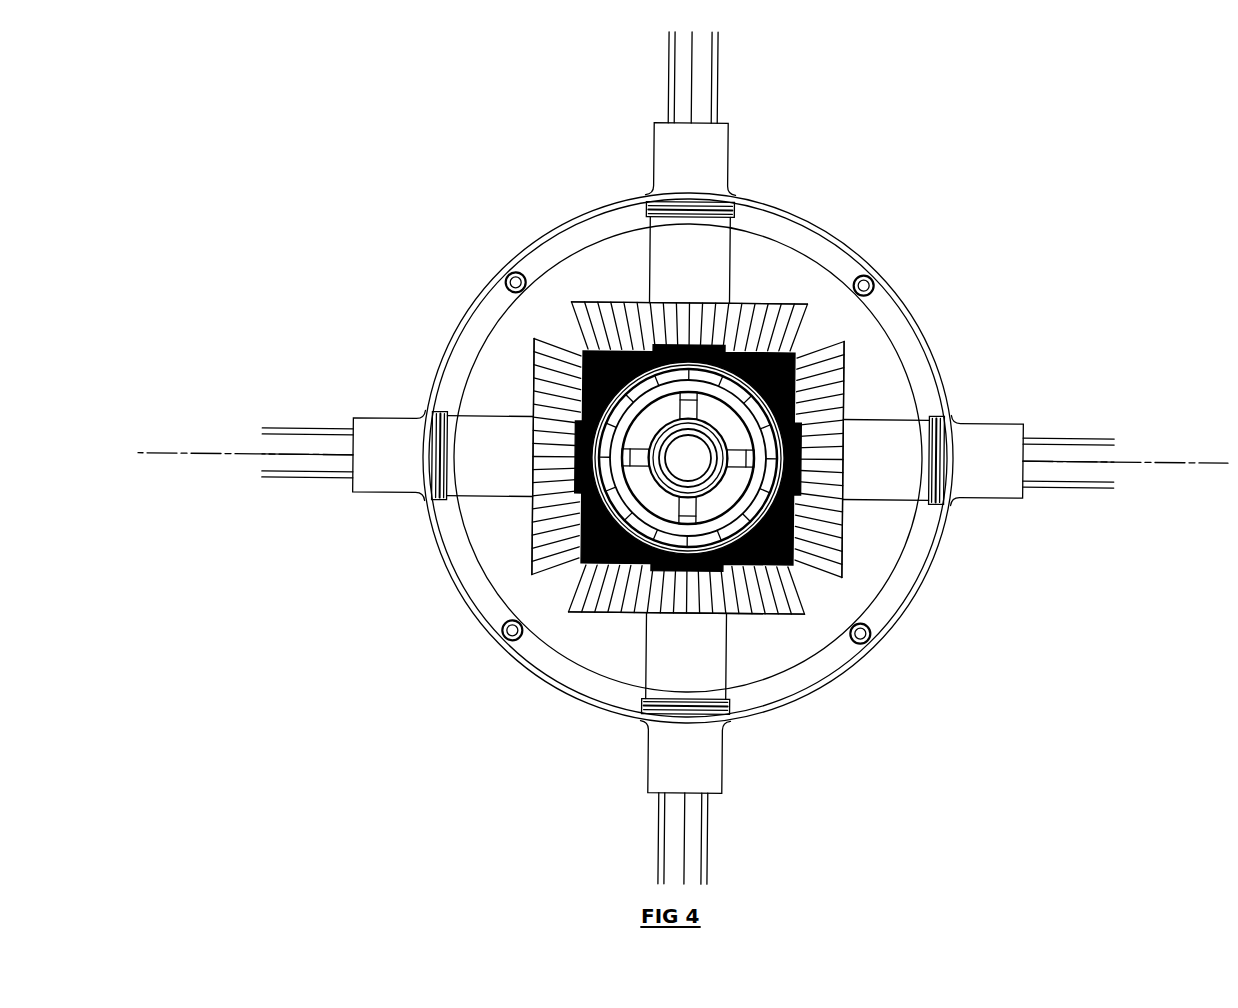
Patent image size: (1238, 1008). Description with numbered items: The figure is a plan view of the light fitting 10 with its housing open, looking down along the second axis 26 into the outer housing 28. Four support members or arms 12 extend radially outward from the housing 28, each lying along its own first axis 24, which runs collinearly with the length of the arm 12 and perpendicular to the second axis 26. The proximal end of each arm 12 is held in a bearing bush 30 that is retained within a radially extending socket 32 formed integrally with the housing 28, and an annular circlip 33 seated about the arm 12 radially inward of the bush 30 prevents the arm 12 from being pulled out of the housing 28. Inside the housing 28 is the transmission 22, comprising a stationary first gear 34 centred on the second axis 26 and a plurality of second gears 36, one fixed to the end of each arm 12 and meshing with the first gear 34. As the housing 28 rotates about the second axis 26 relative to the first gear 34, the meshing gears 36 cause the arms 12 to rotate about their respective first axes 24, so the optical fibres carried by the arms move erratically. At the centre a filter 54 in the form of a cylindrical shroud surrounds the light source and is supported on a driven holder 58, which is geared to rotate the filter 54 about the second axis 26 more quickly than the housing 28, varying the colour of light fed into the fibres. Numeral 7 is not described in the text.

The inner housing wall 7 is at (902, 363).
The light fitting 10 is at (393, 193).
The support member or arm 12 is at (307, 477).
The transmission 22 is at (808, 338).
The first axis 24 is at (158, 452).
The second axis 26 is at (686, 463).
The outer housing 28 is at (908, 297).
The bearing bush 30 is at (740, 205).
The socket 32 is at (716, 160).
The annular circlip 33 is at (733, 214).
The first gear 34 is at (800, 570).
The second gear 36 is at (603, 298).
The filter 54 is at (772, 431).
The driven holder 58 is at (790, 455).